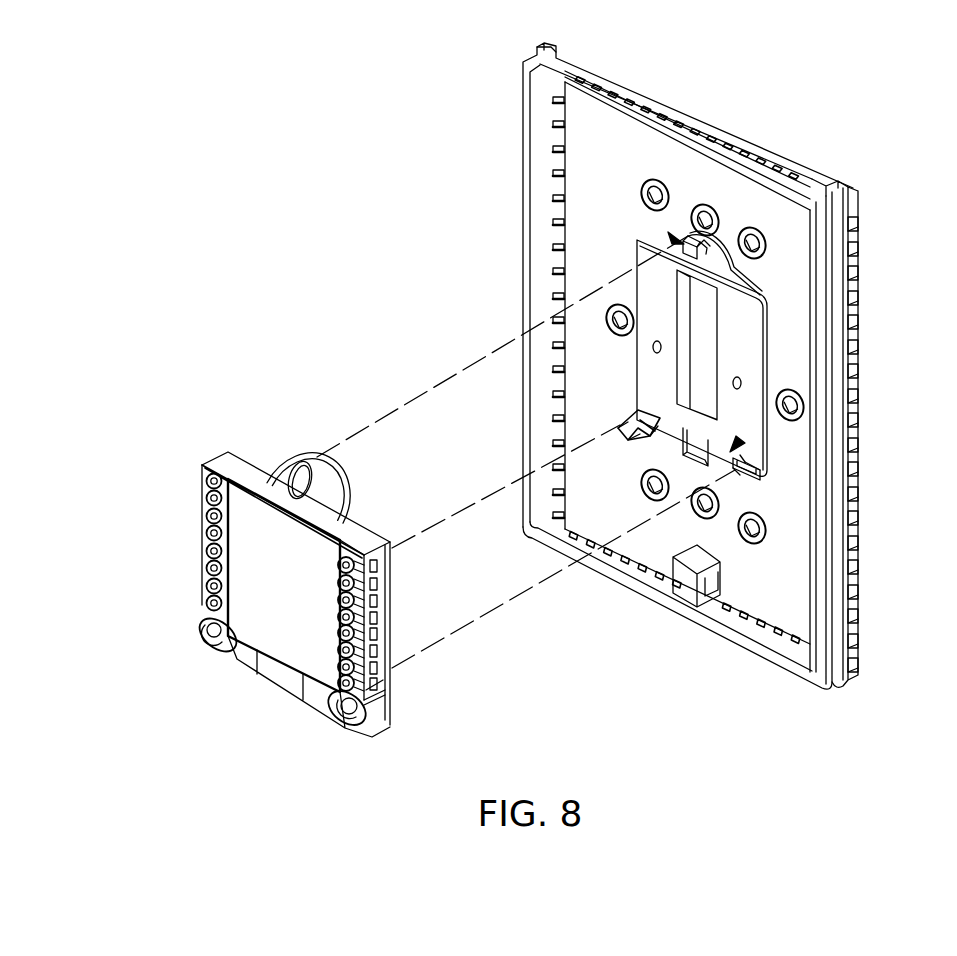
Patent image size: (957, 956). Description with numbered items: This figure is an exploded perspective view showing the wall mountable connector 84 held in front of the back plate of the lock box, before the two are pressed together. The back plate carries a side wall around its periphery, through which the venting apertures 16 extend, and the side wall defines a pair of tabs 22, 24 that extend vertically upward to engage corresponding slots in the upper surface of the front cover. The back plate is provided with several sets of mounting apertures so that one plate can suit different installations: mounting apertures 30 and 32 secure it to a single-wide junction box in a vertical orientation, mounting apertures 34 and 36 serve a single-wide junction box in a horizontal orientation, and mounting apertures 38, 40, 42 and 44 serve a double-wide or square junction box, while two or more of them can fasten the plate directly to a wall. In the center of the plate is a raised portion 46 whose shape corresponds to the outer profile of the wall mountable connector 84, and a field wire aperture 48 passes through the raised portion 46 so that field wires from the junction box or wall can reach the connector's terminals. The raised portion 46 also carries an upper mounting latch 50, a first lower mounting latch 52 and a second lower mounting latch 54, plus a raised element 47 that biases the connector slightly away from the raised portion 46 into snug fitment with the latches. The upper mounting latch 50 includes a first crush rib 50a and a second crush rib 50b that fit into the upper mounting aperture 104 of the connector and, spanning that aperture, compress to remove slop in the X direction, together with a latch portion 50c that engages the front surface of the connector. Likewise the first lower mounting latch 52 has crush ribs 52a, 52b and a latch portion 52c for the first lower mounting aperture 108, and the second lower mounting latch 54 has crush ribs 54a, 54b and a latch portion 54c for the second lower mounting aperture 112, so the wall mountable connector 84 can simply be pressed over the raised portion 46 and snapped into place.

The venting apertures 16 is at (562, 128).
The tab 22 is at (553, 47).
The tab 24 is at (818, 192).
The mounting aperture 30 is at (705, 215).
The mounting aperture 32 is at (700, 512).
The mounting aperture 34 is at (610, 318).
The mounting aperture 36 is at (800, 418).
The mounting aperture 38 is at (645, 190).
The mounting aperture 40 is at (765, 246).
The mounting aperture 42 is at (643, 494).
The mounting aperture 44 is at (760, 542).
The raised portion 46 is at (748, 344).
The raised element 47 is at (637, 374).
The field wire aperture 48 is at (708, 315).
The upper mounting latch 50 is at (682, 226).
The first crush rib 50a is at (707, 248).
The second crush rib 50b is at (672, 238).
The latch portion 50c is at (702, 236).
The first lower mounting latch 52 is at (620, 418).
The first crush rib 52a is at (646, 434).
The second crush rib 52b is at (650, 414).
The latch portion 52c is at (628, 428).
The second lower mounting latch 54 is at (714, 470).
The first crush rib 54a is at (746, 466).
The second crush rib 54b is at (736, 440).
The latch portion 54c is at (740, 497).
The wall mountable connector 84 is at (237, 498).
The upper mounting aperture 104 is at (303, 470).
The first lower mounting aperture 108 is at (203, 630).
The second lower mounting aperture 112 is at (332, 722).